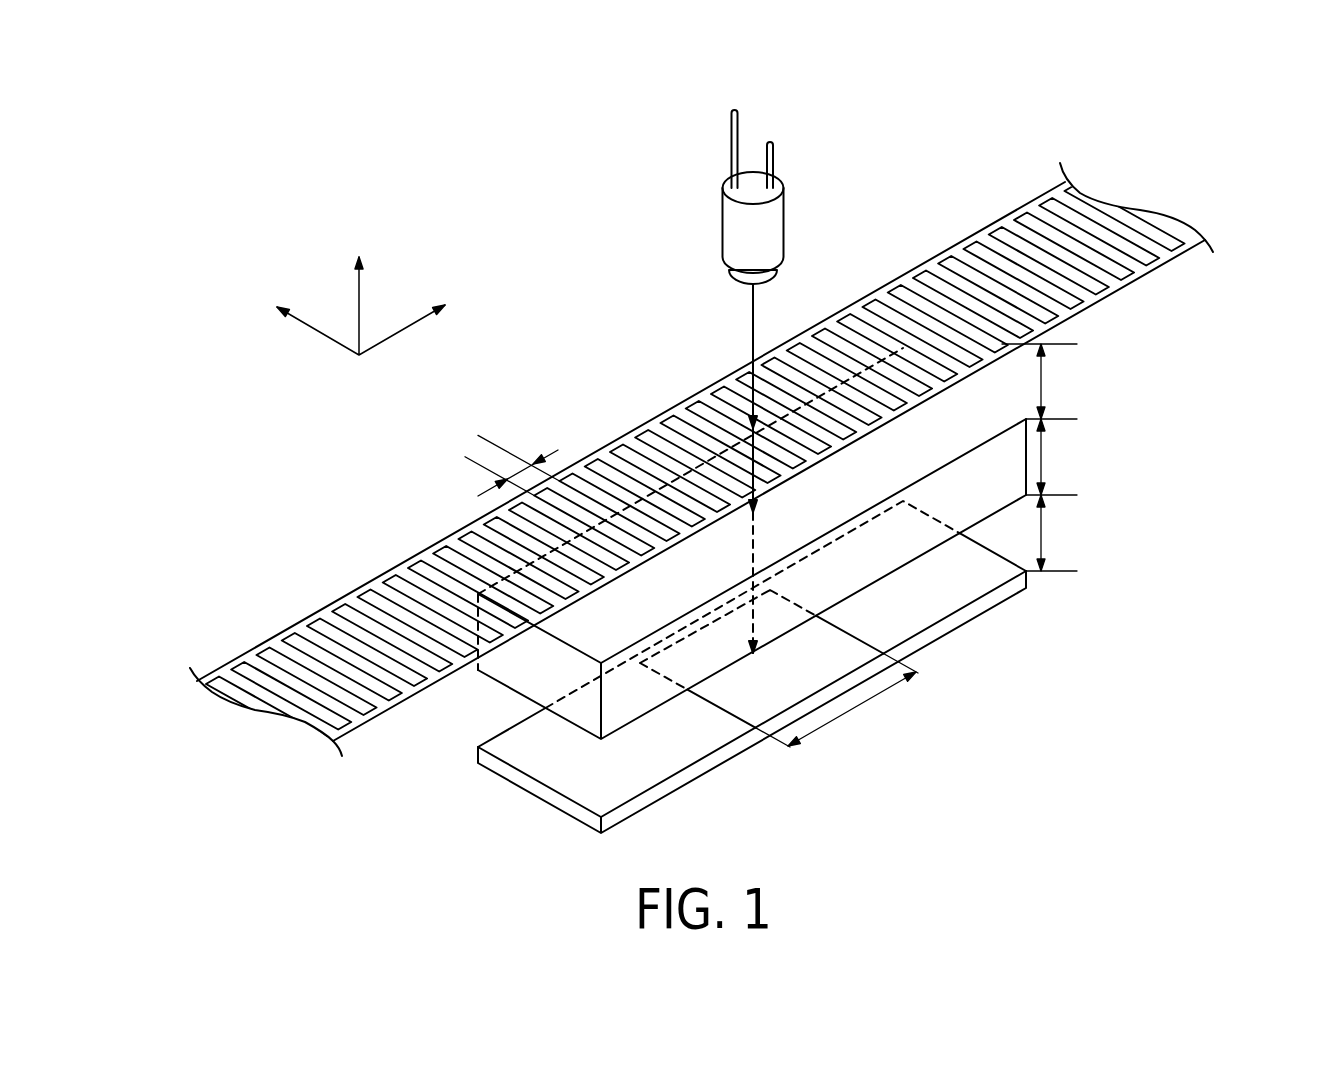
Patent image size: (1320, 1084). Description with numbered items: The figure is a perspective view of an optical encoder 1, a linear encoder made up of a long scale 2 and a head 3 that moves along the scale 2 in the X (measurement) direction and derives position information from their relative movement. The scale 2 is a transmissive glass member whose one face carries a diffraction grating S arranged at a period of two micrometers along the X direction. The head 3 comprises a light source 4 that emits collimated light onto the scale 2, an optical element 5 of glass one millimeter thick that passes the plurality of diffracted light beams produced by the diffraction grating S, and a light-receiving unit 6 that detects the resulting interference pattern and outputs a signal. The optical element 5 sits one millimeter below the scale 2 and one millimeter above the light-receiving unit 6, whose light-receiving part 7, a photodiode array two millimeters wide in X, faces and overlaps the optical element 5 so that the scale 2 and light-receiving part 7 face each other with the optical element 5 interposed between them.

The optical encoder 1 is at (1003, 160).
The scale 2 is at (905, 255).
The head 3 is at (728, 477).
The light source 4 is at (780, 233).
The optical element 5 is at (525, 672).
The light-receiving unit 6 is at (538, 788).
The light-receiving part 7 is at (737, 713).
The diffraction grating S is at (343, 614).